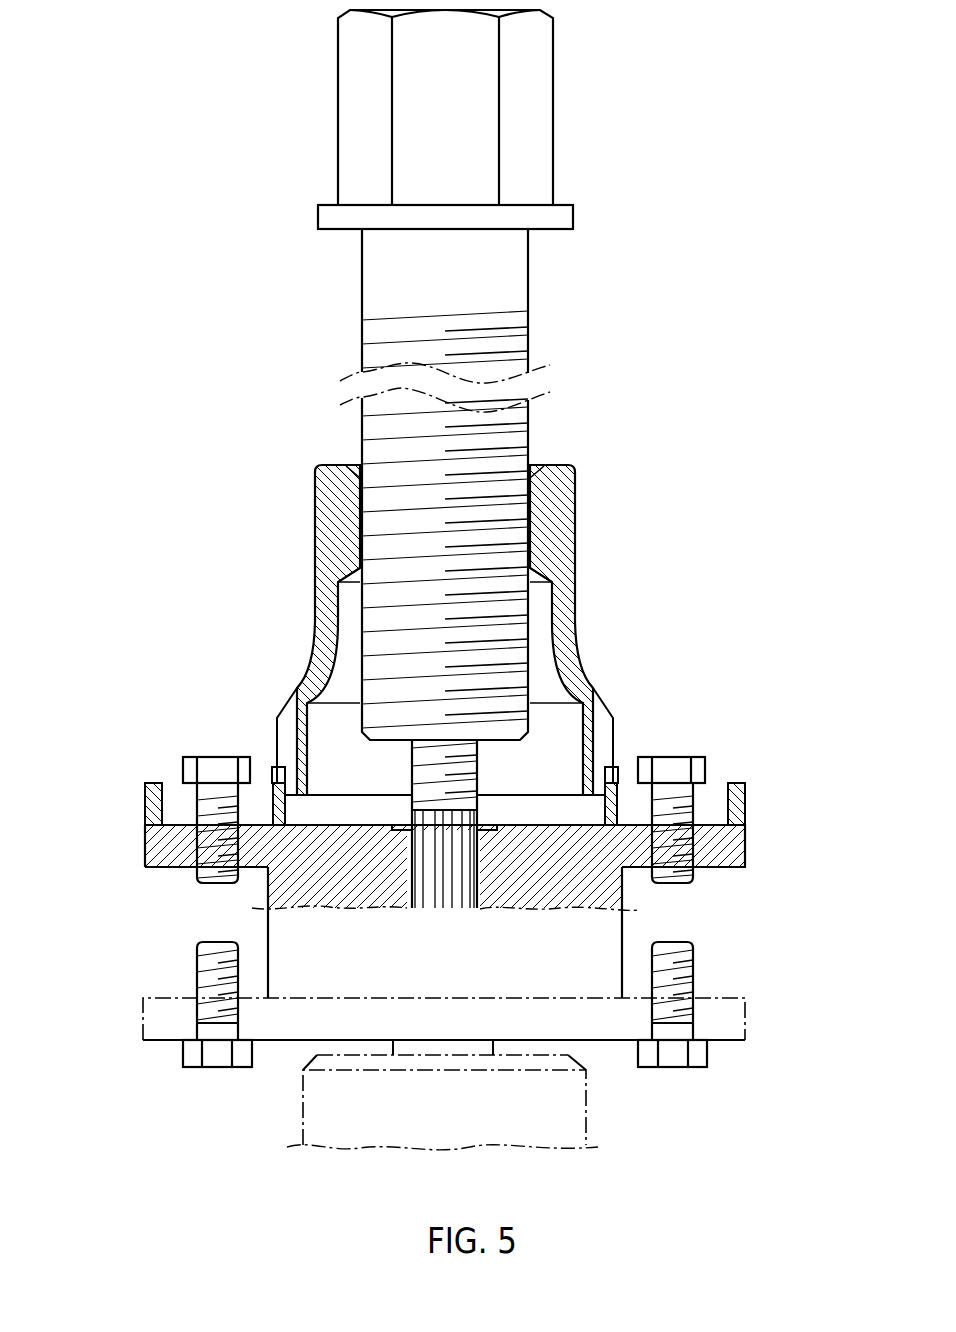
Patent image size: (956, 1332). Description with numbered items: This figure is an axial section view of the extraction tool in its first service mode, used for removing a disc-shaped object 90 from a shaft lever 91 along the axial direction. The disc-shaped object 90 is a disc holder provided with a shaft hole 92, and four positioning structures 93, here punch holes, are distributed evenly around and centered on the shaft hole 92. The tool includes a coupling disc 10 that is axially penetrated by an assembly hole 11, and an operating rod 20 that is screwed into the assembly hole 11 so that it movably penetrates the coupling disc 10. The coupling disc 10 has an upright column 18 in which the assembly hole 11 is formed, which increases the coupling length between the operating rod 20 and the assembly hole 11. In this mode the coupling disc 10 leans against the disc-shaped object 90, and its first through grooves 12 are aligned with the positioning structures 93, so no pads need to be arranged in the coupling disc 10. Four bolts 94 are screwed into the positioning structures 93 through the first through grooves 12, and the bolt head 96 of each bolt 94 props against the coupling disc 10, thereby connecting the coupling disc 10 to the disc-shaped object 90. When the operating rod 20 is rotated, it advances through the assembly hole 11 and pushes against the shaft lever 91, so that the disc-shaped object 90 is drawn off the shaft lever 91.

The operating rod 20 is at (533, 172).
The upright column 18 is at (576, 515).
The assembly hole 11 is at (340, 512).
The coupling disc 10 is at (745, 783).
The first through grooves 12 is at (145, 802).
The disc-shaped object 90 is at (730, 848).
The shaft hole 92 is at (407, 882).
The shaft lever 91 is at (465, 873).
The bolt head 96 is at (216, 757).
The bolts 94 is at (208, 808).
The positioning structures 93 is at (197, 855).